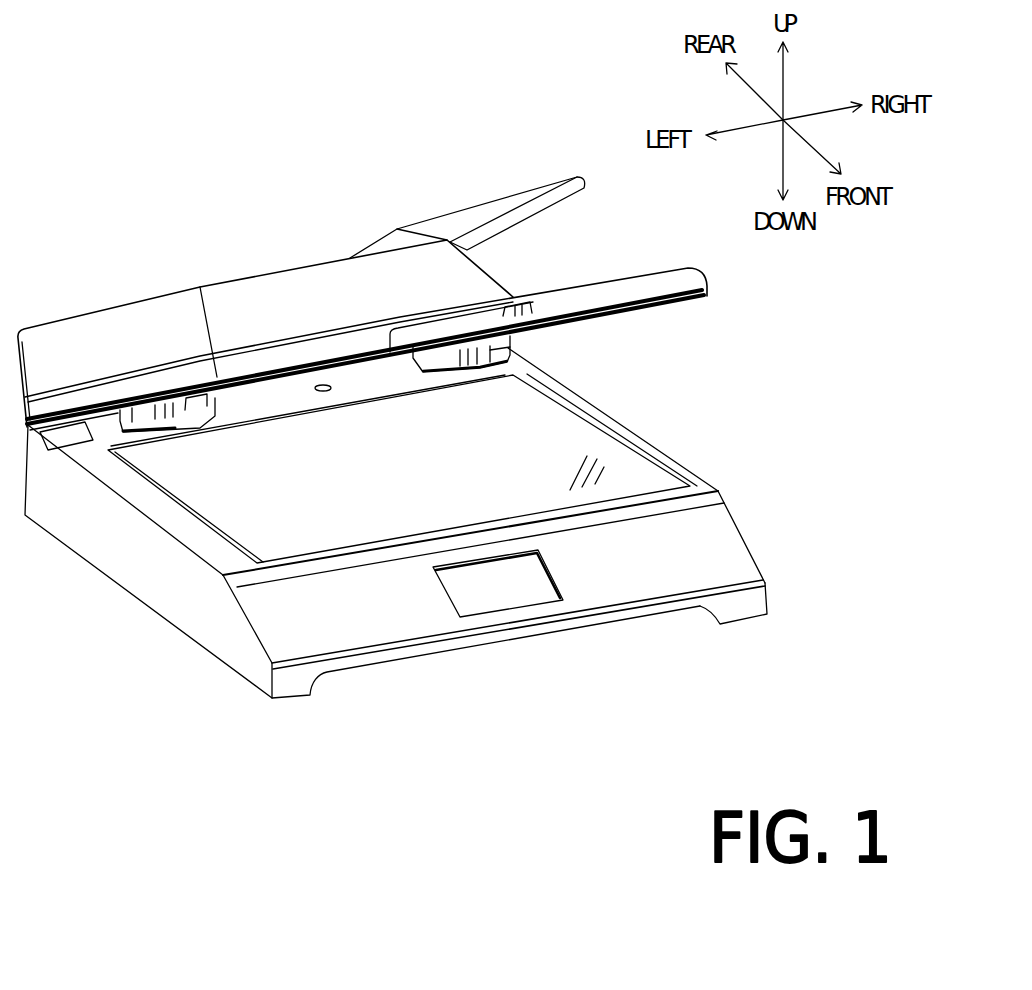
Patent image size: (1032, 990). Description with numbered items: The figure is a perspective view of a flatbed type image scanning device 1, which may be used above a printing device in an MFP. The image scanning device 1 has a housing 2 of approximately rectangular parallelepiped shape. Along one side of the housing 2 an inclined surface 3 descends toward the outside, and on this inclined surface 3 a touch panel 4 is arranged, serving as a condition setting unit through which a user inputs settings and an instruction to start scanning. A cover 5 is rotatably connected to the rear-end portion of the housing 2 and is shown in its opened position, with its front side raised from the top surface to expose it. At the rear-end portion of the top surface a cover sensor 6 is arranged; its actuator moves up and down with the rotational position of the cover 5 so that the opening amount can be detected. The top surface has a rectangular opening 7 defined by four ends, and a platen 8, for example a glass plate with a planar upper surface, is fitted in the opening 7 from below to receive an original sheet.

The image scanning device 1 is at (421, 775).
The housing 2 is at (167, 590).
The inclined surface 3 is at (720, 540).
The touch panel 4 is at (498, 578).
The cover 5 is at (673, 287).
The cover sensor 6 is at (323, 385).
The opening 7 is at (186, 511).
The platen 8 is at (574, 447).